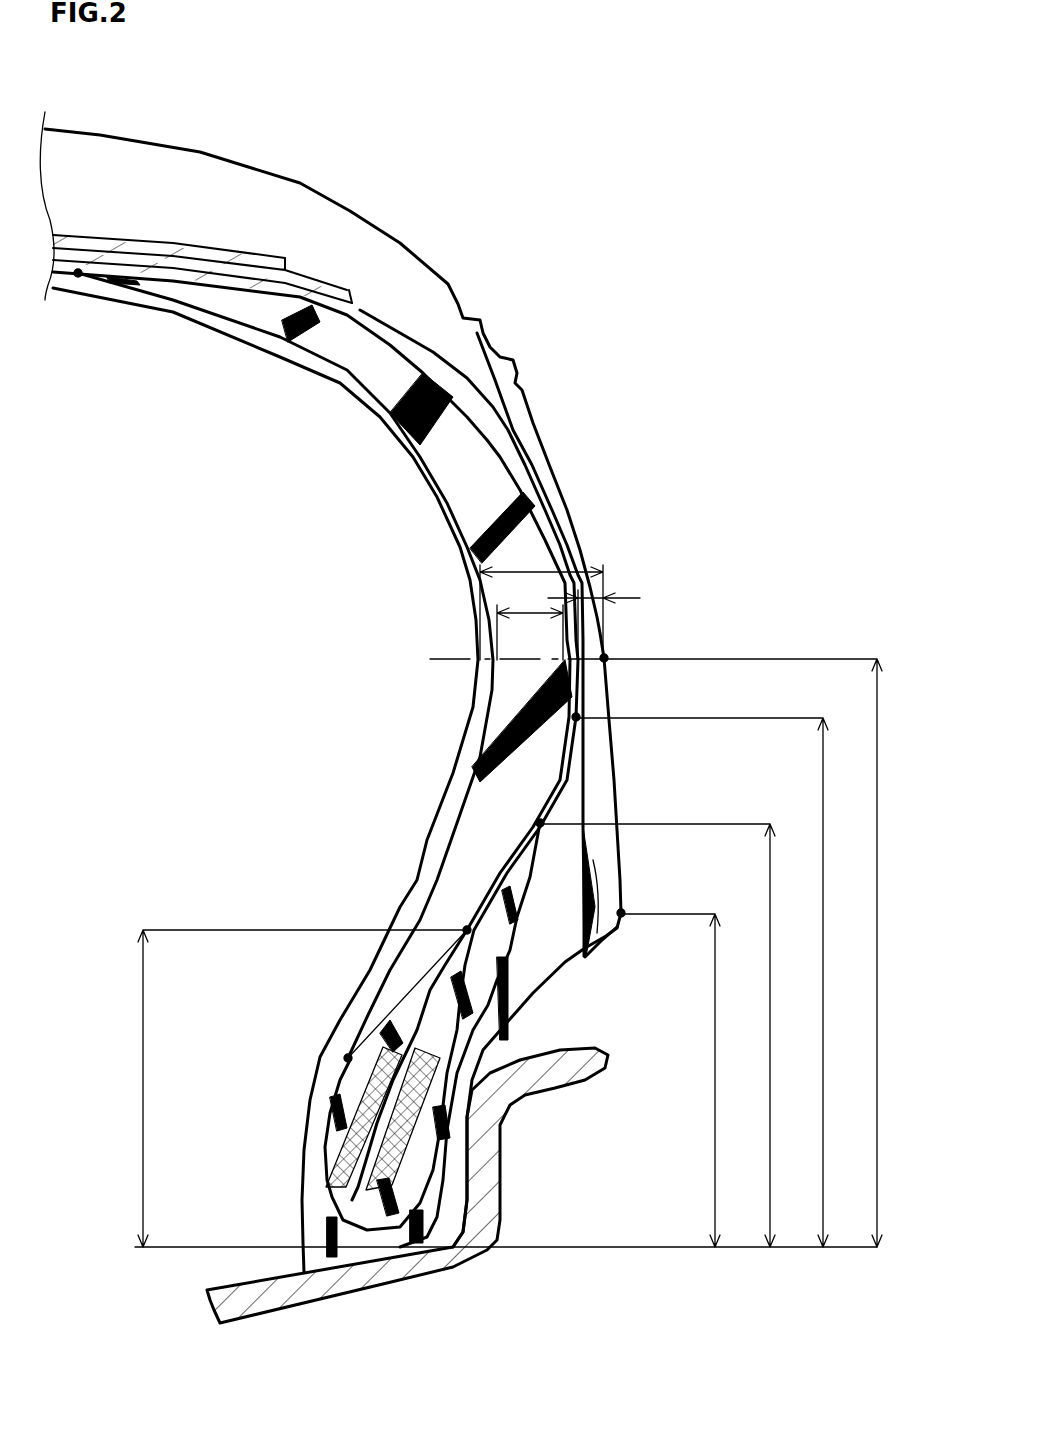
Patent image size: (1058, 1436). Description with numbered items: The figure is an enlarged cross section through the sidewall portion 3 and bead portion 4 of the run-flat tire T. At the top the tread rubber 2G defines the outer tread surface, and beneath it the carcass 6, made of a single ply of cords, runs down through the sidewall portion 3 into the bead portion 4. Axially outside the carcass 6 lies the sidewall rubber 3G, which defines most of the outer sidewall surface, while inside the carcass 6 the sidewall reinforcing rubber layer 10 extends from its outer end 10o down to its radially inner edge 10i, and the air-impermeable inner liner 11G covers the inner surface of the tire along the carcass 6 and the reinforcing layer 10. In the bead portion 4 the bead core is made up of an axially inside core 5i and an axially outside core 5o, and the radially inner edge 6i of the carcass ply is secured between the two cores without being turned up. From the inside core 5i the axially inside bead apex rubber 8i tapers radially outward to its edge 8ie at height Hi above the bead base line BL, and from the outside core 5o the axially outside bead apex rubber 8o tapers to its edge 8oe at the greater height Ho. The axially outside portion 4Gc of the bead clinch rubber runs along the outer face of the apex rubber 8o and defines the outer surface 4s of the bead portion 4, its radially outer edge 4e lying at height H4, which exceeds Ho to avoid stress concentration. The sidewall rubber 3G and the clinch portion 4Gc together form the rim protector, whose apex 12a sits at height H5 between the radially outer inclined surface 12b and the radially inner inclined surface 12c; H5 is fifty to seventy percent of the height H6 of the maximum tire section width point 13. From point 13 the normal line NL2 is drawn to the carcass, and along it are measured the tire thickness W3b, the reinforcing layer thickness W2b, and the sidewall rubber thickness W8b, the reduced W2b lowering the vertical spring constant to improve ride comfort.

The tread rubber 2G is at (215, 194).
The run-flat tire T is at (467, 132).
The carcass 6 is at (420, 357).
The sidewall reinforcing rubber layer 10 is at (500, 708).
The outer end of carcass ply 10 10o is at (78, 278).
The radially inner edge of the sidewall reinforcing rubber layer 10i is at (346, 1060).
The inner liner 11G is at (358, 396).
The sidewall rubber 3G is at (545, 465).
The radially outer edge of the axially outside bead apex rubber 8oe is at (538, 820).
The radially outer edge of the axially inside bead apex rubber 8ie is at (465, 928).
The axially inside bead apex rubber 8i is at (410, 1017).
The axially outside bead apex rubber 8o is at (442, 1070).
The radially outer inclined surface 12b is at (622, 875).
The apex 12a is at (622, 919).
The radially inner inclined surface 12c is at (533, 1005).
The outer surface of the bead portion 4s is at (545, 1040).
The radially outer edge of the axially outside portion 4e is at (580, 716).
The maximum tire section width point 13 is at (608, 656).
The sidewall portion 3 is at (634, 783).
The bead portion 4 is at (285, 1040).
The radially inner edge of the carcass ply 6i is at (337, 1210).
The axially inside core 5i is at (350, 1152).
The axially outside core 5o is at (430, 1150).
The axially outside portion 4Gc is at (473, 1053).
The normal line NL2 is at (470, 676).
The tire thickness W3b is at (470, 568).
The thickness of the sidewall reinforcing rubber layer W2b is at (470, 612).
The thickness of the sidewall rubber W8b is at (608, 598).
The bead base line BL is at (673, 1249).
The radial height of the maximum tire section width point H6 is at (764, 953).
The radial height of the radially outer edge of the axially outside portion H4 is at (724, 982).
The radial height of the outside bead apex rubber Ho is at (678, 1035).
The radial height of the apex H5 is at (691, 1080).
The radial height of the inside bead apex rubber Hi is at (285, 1088).